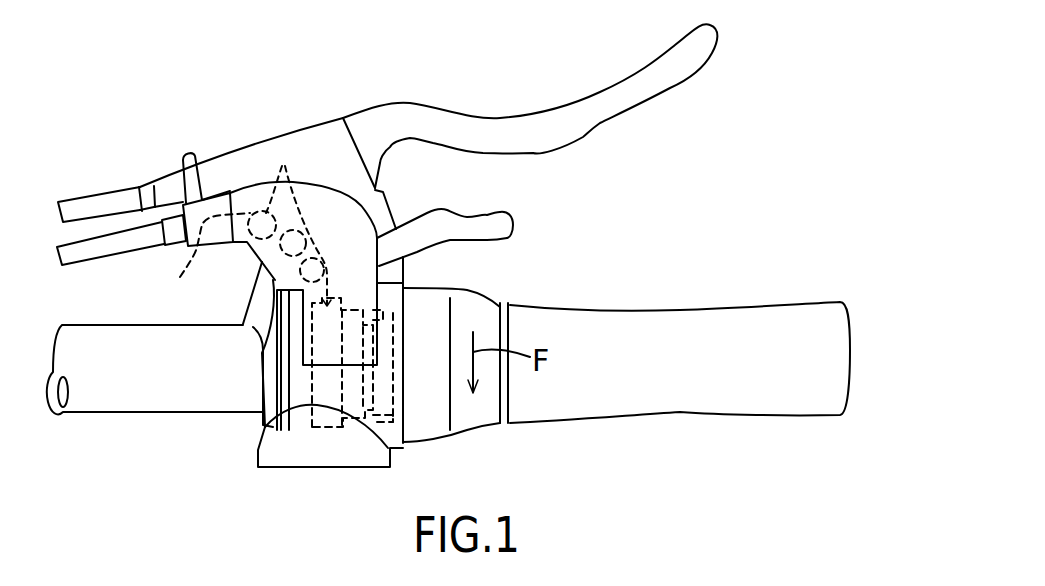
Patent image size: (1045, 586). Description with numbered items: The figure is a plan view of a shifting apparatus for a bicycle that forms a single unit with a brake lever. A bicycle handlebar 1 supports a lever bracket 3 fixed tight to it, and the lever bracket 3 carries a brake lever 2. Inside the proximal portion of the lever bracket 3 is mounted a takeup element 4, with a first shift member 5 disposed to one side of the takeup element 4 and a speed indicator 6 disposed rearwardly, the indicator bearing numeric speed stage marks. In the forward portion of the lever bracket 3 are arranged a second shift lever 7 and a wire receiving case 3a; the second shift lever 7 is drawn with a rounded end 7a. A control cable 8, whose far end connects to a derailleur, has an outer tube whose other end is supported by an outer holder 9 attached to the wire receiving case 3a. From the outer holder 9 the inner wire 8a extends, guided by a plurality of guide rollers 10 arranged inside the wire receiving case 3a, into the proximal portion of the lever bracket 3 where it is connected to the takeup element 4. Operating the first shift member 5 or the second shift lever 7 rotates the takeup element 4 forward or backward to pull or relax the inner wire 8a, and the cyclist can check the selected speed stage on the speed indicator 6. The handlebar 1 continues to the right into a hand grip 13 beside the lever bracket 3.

The bicycle handlebar 1 is at (107, 405).
The brake lever 2 is at (562, 107).
The lever bracket 3 is at (240, 302).
The wire receiving case 3a is at (318, 188).
The takeup element 4 is at (333, 430).
The first shift member 5 is at (478, 425).
The speed indicator 6 is at (287, 470).
The second shift lever 7 is at (428, 212).
The knob of release lever 7a is at (510, 223).
The control cable 8 is at (90, 242).
The inner wire 8a is at (195, 254).
The outer holder 9 is at (220, 200).
The guide rollers 10 is at (283, 168).
The hand grip 13 is at (662, 318).